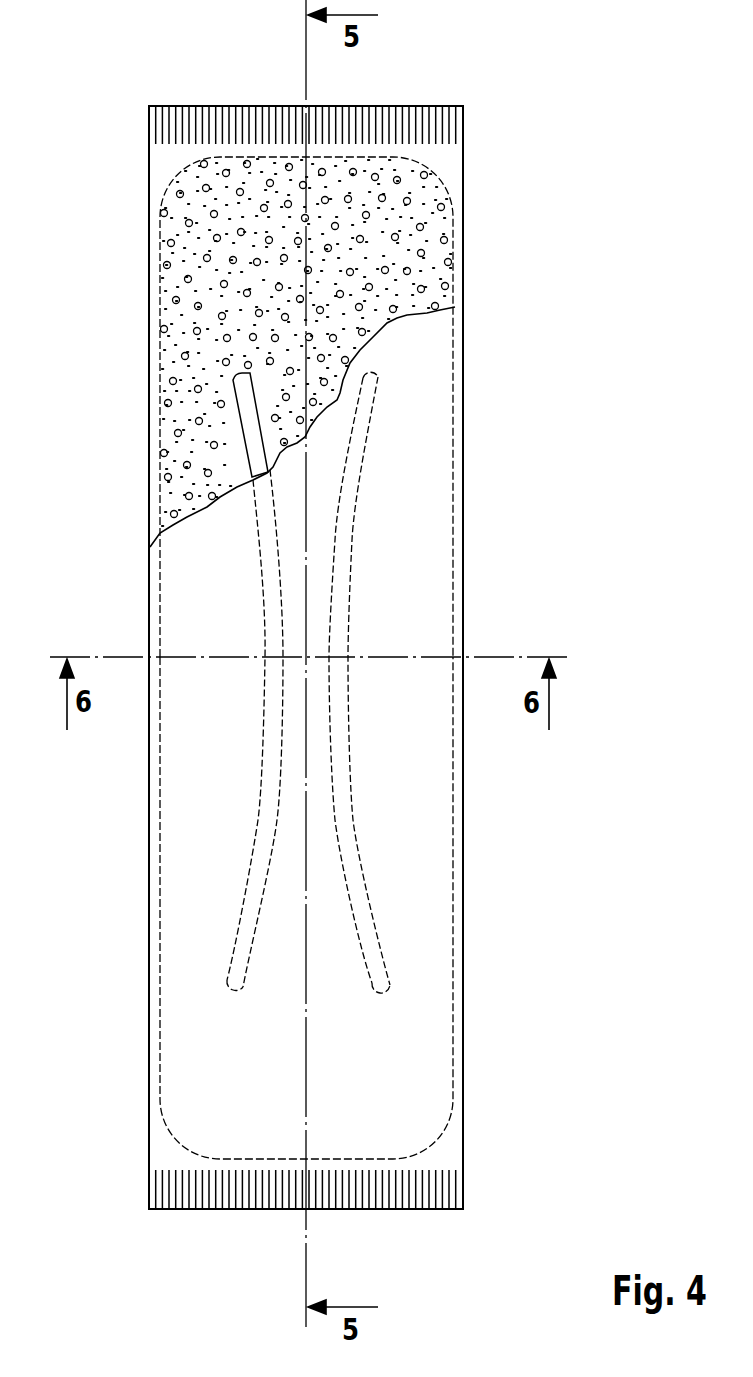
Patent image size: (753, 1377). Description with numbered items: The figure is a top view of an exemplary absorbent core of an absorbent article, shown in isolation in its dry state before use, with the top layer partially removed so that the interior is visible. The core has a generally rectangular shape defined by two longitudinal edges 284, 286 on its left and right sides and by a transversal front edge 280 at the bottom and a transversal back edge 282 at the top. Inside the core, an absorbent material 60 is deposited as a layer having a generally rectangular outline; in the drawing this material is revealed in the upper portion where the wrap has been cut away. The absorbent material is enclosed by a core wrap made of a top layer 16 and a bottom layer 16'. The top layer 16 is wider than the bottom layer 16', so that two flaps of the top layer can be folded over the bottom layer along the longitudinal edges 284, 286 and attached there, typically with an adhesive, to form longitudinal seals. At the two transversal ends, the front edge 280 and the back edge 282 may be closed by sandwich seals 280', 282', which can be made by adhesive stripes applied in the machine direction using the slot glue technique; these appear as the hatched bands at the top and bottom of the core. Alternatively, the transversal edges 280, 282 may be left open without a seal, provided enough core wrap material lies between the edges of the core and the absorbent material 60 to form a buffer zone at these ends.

The back edge 282 is at (362, 624).
The sandwich seal 282' is at (361, 126).
The bottom layer 16' is at (362, 407).
The absorbent material 60 is at (183, 331).
The longitudinal edge 286 is at (463, 514).
The longitudinal edge 284 is at (149, 906).
The top layer 16 is at (351, 908).
The sandwich seal 280' is at (361, 1189).
The front edge 280 is at (280, 1245).